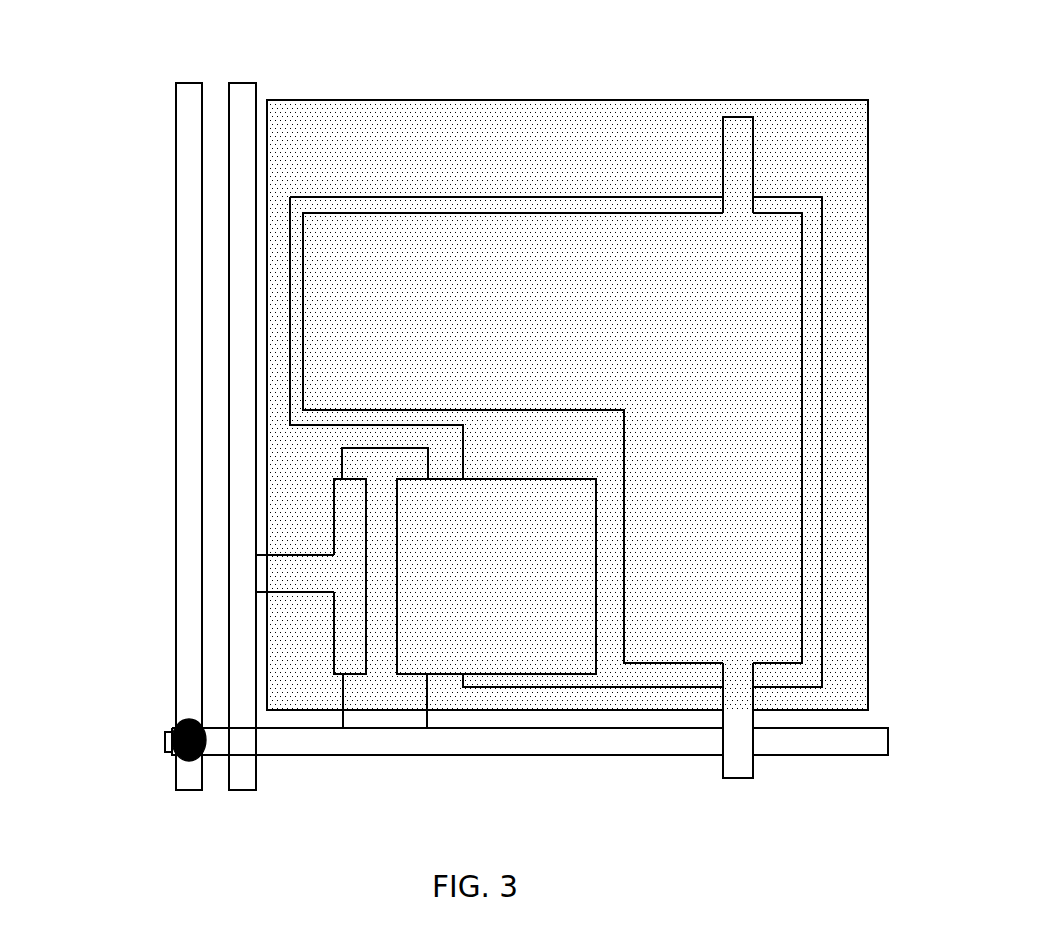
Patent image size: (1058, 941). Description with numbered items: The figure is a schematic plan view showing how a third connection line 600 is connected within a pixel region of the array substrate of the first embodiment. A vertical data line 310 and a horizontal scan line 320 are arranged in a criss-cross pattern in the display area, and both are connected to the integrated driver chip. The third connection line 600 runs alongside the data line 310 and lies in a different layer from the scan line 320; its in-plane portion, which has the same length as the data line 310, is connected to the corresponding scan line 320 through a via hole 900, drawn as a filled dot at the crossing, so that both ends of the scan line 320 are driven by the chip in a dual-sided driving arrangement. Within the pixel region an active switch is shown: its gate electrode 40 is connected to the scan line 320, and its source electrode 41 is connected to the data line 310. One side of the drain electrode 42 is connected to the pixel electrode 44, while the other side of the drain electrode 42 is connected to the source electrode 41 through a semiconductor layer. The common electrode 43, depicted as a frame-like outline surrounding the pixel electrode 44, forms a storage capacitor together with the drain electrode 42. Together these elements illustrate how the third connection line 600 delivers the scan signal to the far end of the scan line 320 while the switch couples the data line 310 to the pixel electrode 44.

The data line 310 is at (239, 146).
The scan line 320 is at (447, 742).
The third connection line 600 is at (190, 263).
The via hole 900 is at (190, 762).
The gate electrode 40 is at (378, 695).
The source electrode 41 is at (290, 565).
The drain electrode 42 is at (543, 638).
The common electrode 43 is at (665, 290).
The pixel electrode 44 is at (538, 100).